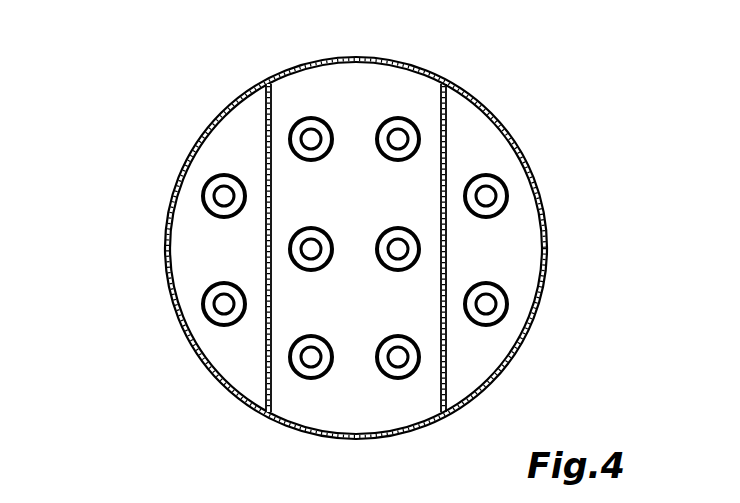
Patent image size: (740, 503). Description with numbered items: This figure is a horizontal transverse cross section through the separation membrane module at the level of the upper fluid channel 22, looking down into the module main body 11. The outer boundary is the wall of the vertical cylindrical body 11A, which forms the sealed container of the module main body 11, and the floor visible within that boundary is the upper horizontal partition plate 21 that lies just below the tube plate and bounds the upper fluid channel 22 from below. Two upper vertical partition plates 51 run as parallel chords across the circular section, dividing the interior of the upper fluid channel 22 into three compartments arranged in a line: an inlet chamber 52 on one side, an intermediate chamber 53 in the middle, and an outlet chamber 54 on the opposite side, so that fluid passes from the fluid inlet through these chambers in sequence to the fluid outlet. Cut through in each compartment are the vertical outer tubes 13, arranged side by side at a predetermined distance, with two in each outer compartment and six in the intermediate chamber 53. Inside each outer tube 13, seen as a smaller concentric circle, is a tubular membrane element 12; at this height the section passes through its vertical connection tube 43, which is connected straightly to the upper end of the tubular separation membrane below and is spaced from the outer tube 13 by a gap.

The module main body 11 is at (366, 233).
The vertical cylindrical body 11A is at (167, 234).
The tubular membrane element 12 is at (503, 204).
The vertical outer tube 13 is at (224, 326).
The upper horizontal partition plate 21 is at (473, 135).
The upper fluid channel 22 is at (252, 92).
The vertical connection tube 43 is at (216, 315).
The upper vertical partition plate 51 is at (441, 208).
The inlet chamber 52 is at (506, 263).
The intermediate chamber 53 is at (374, 184).
The outlet chamber 54 is at (233, 265).